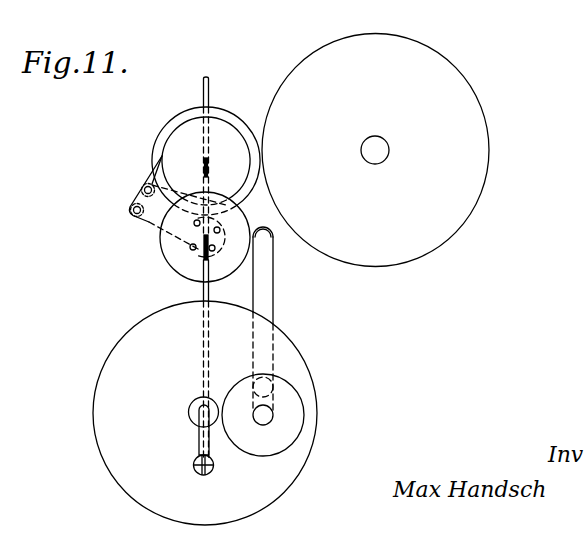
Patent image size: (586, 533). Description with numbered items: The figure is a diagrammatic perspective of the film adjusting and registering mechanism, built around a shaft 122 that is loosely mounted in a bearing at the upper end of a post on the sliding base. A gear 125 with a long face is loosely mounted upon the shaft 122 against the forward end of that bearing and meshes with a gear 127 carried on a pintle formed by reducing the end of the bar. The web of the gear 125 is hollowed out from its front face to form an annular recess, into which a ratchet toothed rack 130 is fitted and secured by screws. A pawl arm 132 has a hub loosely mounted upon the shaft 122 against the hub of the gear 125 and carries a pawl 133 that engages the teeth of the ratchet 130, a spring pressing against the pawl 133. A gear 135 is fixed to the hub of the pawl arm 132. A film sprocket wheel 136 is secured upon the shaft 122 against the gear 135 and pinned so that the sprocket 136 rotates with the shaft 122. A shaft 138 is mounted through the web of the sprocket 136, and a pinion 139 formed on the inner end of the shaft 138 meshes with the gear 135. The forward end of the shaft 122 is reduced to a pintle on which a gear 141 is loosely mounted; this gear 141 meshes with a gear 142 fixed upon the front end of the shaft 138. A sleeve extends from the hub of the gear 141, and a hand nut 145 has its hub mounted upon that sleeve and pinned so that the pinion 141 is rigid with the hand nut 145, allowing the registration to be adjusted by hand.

The shaft 122 is at (199, 445).
The gear 125 is at (167, 128).
The gear 127 is at (279, 85).
The ratchet toothed rack 130 is at (167, 151).
The pawl arm 132 is at (139, 217).
The pawl 133 is at (144, 189).
The gear 135 is at (172, 272).
The film sprocket wheel 136 is at (108, 357).
The shaft 138 is at (273, 303).
The pinion 139 is at (274, 238).
The gear 141 is at (188, 411).
The gear 142 is at (233, 390).
The hand nut 145 is at (195, 470).